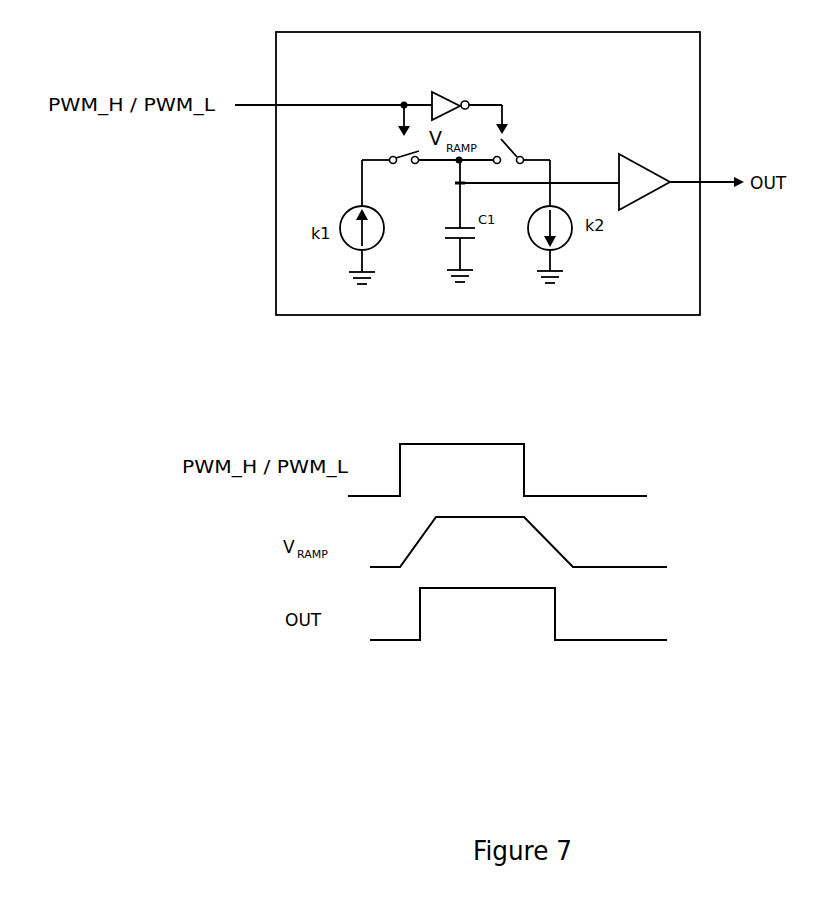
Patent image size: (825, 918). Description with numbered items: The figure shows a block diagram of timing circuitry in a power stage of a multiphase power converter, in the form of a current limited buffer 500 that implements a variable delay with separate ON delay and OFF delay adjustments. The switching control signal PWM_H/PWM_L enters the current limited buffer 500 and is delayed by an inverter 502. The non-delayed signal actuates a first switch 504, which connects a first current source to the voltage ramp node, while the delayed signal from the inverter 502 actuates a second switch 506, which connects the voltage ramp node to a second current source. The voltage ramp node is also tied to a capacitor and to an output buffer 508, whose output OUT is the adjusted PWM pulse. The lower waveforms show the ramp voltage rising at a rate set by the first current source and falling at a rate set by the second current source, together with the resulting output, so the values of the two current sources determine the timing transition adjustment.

The current limited buffer 500 is at (488, 173).
The inverter 502 is at (445, 92).
The first switch 504 is at (402, 182).
The second switch 506 is at (520, 146).
The output buffer 508 is at (681, 182).